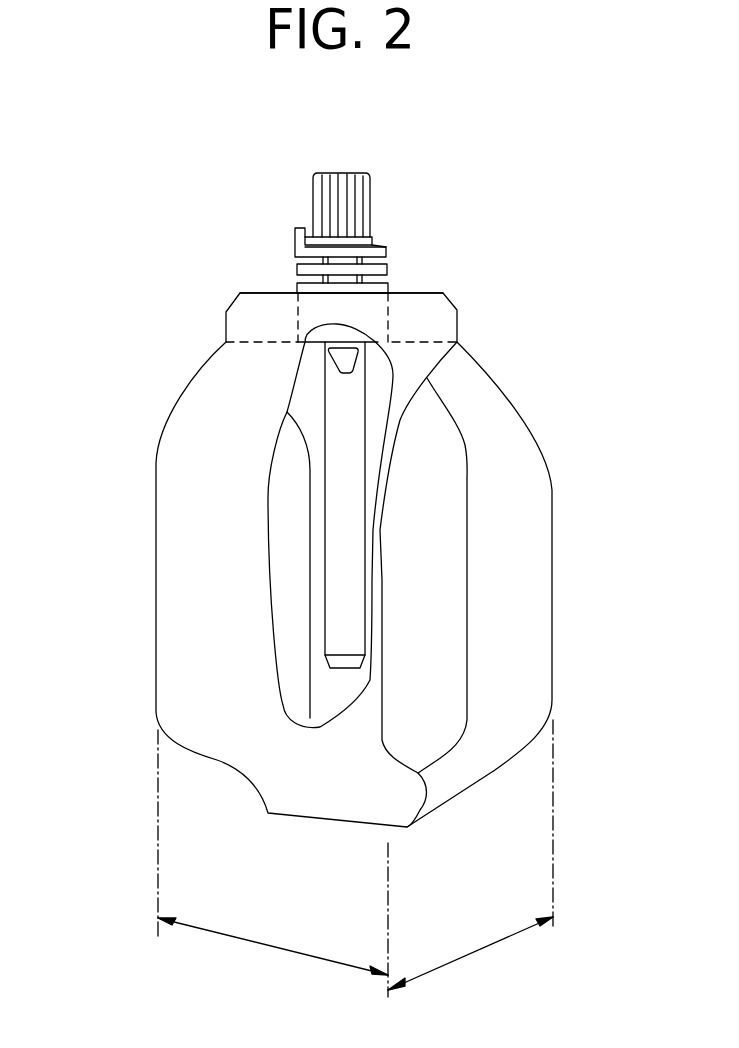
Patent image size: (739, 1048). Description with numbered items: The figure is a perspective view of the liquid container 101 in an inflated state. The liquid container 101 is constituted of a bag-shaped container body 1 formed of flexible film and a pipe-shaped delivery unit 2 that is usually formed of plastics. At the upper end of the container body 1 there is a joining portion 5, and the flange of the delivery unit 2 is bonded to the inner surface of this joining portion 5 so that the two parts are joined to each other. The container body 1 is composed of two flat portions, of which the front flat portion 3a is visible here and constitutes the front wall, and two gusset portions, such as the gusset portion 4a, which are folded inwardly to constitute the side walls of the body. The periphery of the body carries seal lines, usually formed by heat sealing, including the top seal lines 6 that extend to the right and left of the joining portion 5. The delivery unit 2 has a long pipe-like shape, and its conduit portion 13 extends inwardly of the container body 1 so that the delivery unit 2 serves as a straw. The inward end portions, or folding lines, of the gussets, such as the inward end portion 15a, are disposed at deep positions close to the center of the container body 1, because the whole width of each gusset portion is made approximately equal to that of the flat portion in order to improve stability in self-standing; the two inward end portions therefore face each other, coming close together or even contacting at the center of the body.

The liquid container 101 is at (88, 83).
The container body 1 is at (170, 391).
The delivery unit 2 is at (300, 192).
The joining portion 5 is at (373, 315).
The top seal lines 6 is at (262, 300).
The front flat portion 3a is at (180, 505).
The gusset portion 4a is at (530, 503).
The conduit portion 13 is at (333, 560).
The inward end portion 15a is at (467, 652).